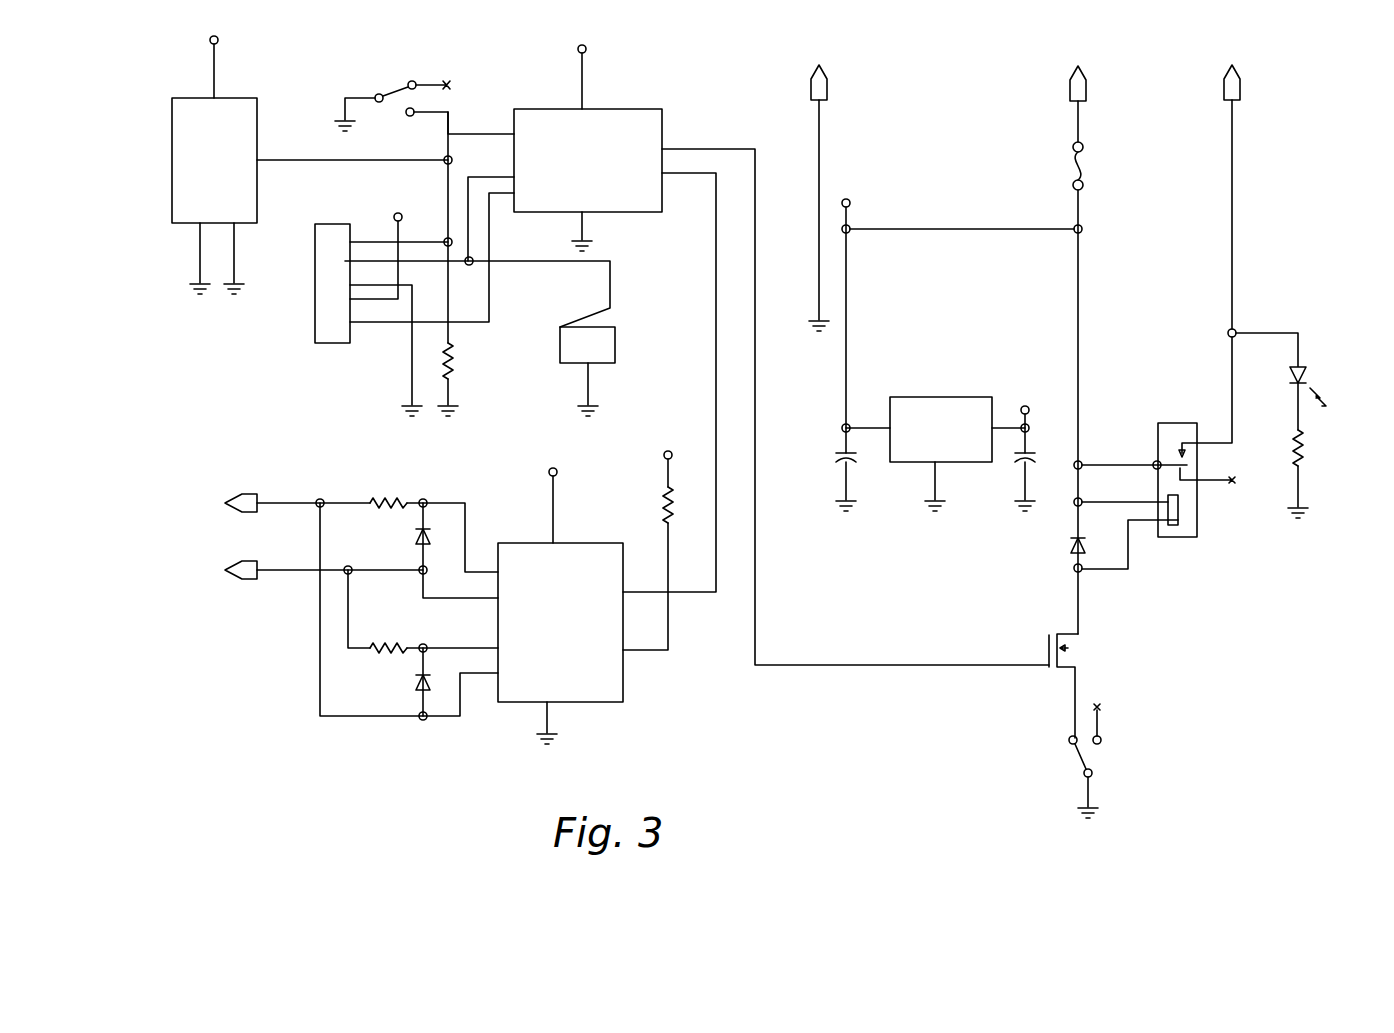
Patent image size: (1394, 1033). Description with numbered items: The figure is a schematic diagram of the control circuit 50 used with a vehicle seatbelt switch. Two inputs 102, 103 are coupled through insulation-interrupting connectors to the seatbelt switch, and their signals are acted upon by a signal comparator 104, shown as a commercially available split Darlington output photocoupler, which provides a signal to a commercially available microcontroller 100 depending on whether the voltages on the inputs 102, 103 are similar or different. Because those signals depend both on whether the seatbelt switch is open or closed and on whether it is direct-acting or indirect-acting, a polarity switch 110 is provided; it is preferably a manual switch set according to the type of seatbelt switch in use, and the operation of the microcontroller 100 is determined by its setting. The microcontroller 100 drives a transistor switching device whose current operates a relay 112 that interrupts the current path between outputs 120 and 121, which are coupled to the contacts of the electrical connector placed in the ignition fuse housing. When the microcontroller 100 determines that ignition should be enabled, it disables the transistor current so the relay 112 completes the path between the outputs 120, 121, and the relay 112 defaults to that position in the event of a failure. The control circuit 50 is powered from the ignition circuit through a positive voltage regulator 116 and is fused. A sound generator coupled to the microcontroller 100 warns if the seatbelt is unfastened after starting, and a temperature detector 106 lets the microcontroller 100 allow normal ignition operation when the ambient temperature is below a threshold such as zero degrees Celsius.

The control circuit 50 is at (632, 75).
The microcontroller 100 is at (640, 108).
The input 102 is at (237, 493).
The input 103 is at (237, 580).
The signal comparator 104 is at (522, 703).
The temperature detector 106 is at (241, 103).
The polarity switch 110 is at (420, 73).
The relay 112 is at (1158, 432).
The positive voltage regulator 116 is at (953, 397).
The output 120 is at (1072, 72).
The output 121 is at (1240, 77).